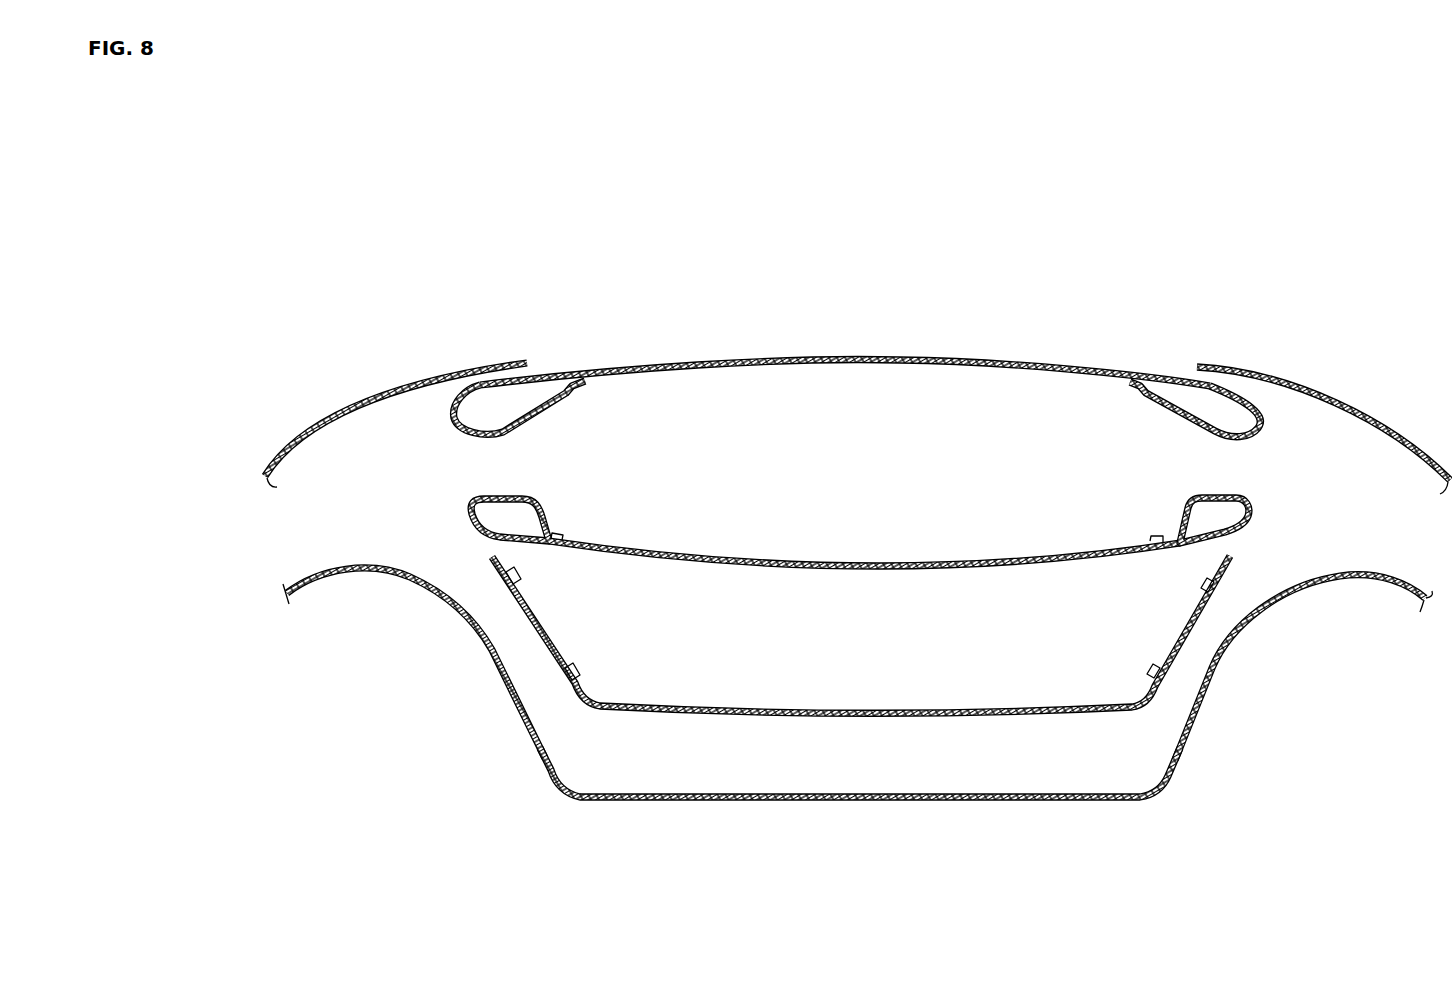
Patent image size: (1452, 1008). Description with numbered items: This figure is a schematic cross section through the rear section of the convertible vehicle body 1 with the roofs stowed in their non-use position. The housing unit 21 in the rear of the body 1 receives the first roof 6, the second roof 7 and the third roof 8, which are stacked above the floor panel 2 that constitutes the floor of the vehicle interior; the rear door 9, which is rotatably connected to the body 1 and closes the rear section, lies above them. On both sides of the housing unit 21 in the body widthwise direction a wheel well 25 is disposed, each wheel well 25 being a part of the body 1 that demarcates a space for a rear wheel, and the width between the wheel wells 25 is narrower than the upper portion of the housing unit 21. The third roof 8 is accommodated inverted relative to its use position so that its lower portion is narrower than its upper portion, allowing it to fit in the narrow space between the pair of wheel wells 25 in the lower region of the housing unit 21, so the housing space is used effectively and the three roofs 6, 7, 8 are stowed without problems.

The vehicle body 1 is at (860, 825).
The floor panel 2 is at (878, 800).
The first roof 6 is at (903, 357).
The second roof 7 is at (896, 562).
The third roof 8 is at (873, 713).
The rear door 9 is at (1353, 398).
The housing unit 21 is at (905, 654).
The wheel well 25 is at (517, 700).